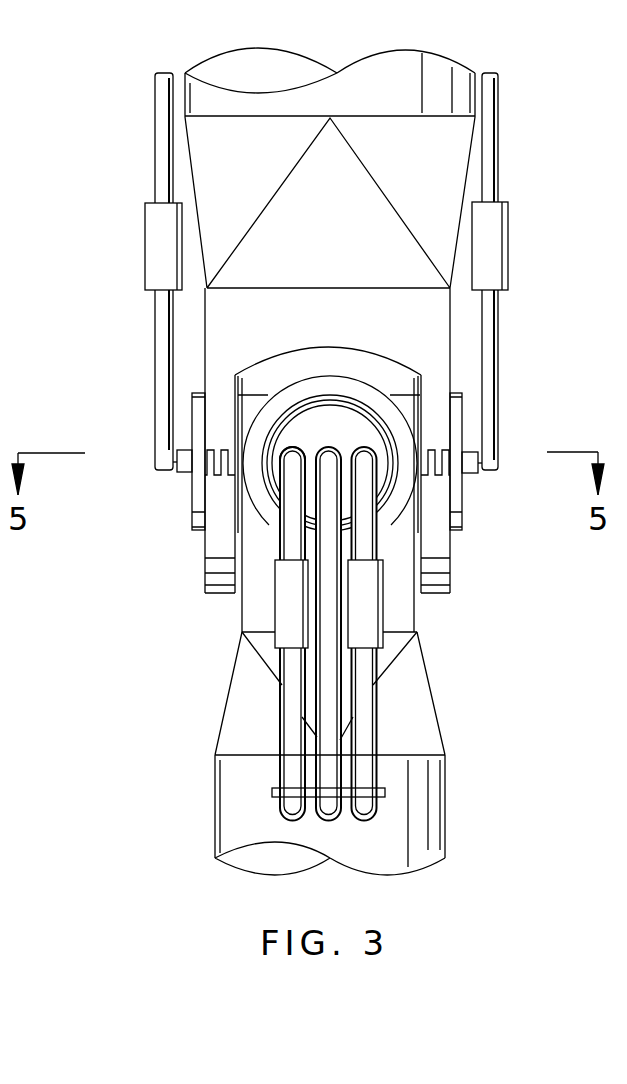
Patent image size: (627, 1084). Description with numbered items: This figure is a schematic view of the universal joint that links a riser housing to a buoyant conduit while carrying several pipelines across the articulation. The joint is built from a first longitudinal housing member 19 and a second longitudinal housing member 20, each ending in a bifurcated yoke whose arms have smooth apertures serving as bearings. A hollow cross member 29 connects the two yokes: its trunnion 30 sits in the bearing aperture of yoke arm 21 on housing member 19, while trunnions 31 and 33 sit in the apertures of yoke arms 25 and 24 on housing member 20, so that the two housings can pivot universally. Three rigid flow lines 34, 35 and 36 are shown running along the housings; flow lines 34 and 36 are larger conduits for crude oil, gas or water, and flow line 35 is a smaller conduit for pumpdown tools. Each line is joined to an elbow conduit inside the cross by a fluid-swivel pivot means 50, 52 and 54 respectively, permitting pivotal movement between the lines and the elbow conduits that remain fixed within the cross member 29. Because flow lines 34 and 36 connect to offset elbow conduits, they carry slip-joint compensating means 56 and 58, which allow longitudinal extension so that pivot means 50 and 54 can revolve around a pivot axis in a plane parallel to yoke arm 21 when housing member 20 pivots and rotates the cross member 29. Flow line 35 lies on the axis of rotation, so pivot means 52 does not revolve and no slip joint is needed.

The first longitudinal housing member 19 is at (413, 827).
The second longitudinal housing member 20 is at (428, 168).
The yoke arm 21 is at (343, 383).
The yoke arm 24 is at (435, 545).
The yoke arm 25 is at (222, 515).
The cross member 29 is at (410, 405).
The trunnion 30 is at (317, 397).
The trunnion 31 is at (200, 420).
The trunnion 33 is at (460, 407).
The flow line 34 is at (372, 680).
The flow line 35 is at (333, 707).
The flow line 36 is at (290, 700).
The pivot means 50 is at (370, 457).
The pivot means 52 is at (340, 457).
The pivot means 54 is at (295, 447).
The compensating means 56 is at (497, 238).
The compensating means 58 is at (278, 608).